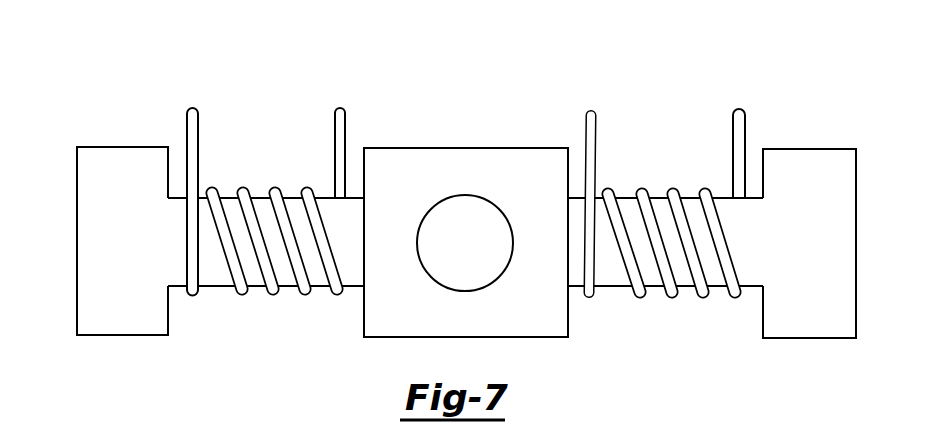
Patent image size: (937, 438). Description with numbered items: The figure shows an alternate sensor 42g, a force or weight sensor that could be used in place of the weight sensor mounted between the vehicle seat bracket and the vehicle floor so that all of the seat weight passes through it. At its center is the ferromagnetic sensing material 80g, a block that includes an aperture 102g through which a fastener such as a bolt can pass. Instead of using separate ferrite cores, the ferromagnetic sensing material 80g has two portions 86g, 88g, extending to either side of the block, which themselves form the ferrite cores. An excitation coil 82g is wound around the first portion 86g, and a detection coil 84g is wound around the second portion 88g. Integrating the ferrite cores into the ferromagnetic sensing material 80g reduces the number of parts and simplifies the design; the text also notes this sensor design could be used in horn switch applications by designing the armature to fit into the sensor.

The alternate sensor 42g is at (466, 186).
The ferromagnetic sensing material 80g is at (465, 136).
The excitation coil 82g is at (187, 122).
The detection coil 84g is at (733, 130).
The core portion for excitation coil 86g is at (252, 265).
The core portion for detection coil 88g is at (607, 282).
The aperture 102g is at (440, 283).